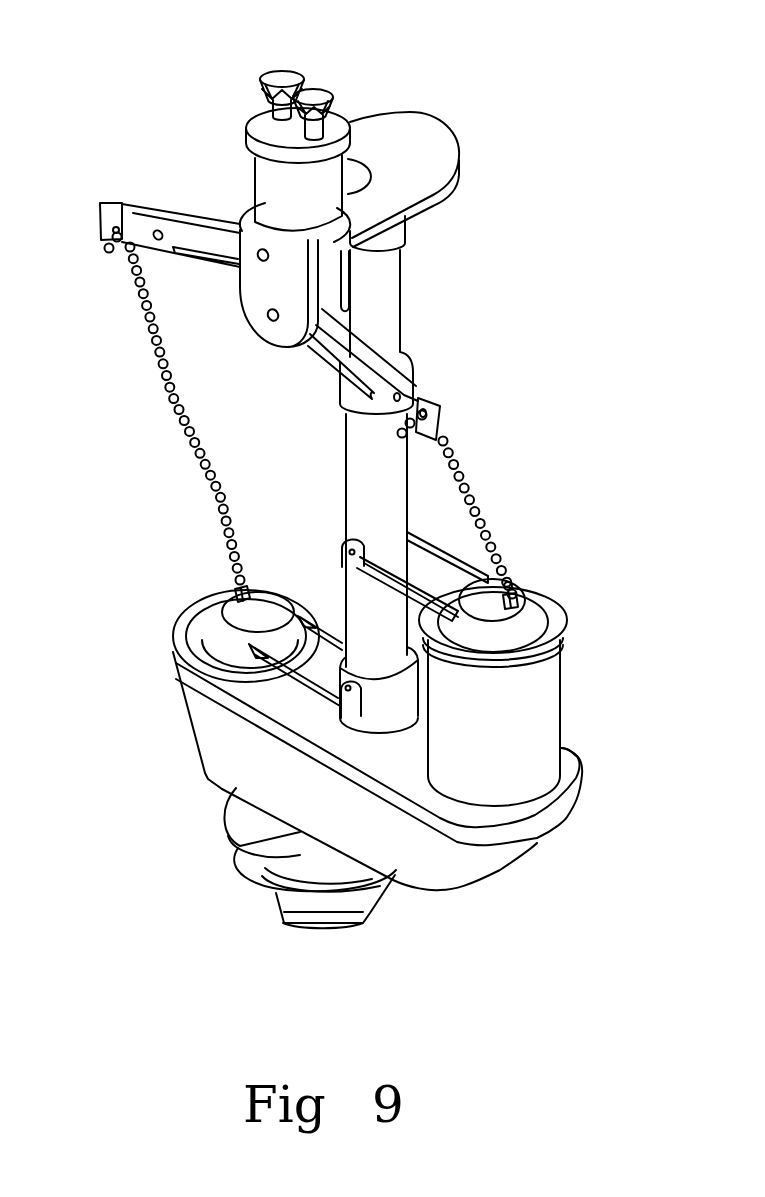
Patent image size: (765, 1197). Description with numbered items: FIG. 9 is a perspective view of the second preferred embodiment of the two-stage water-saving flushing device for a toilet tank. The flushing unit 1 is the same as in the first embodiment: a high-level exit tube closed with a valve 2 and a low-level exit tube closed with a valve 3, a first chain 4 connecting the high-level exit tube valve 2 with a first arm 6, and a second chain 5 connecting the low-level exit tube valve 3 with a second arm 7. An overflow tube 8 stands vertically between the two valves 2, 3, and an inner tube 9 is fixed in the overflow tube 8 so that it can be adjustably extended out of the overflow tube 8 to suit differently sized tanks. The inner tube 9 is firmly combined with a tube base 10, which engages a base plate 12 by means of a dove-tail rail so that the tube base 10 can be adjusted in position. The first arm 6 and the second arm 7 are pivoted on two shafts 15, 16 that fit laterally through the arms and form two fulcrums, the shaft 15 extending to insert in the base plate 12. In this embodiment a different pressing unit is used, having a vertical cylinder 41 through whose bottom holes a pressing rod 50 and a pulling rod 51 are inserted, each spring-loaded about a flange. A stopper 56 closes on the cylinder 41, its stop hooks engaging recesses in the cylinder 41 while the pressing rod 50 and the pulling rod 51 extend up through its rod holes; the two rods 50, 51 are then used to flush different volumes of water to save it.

The flushing unit 1 is at (573, 732).
The high-level exit tube valve 2 is at (547, 607).
The low-level exit tube valve 3 is at (207, 593).
The first chain 4 is at (477, 508).
The second chain 5 is at (170, 401).
The first arm 6 is at (116, 205).
The second arm 7 is at (337, 373).
The overflow tube 8 is at (352, 489).
The inner tube 9 is at (398, 305).
The tube base 10 is at (408, 219).
The base plate 12 is at (427, 137).
The shaft 15 is at (260, 262).
The shaft 16 is at (271, 322).
The vertical cylinder 41 is at (258, 178).
The pressing rod 50 is at (283, 73).
The pulling rod 51 is at (318, 95).
The stopper 56 is at (247, 122).